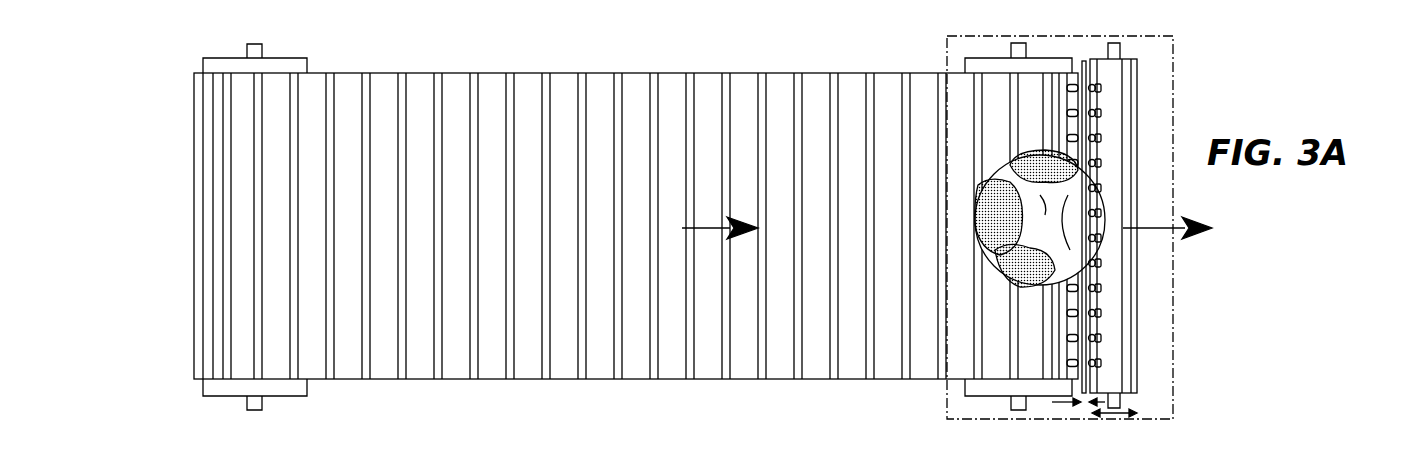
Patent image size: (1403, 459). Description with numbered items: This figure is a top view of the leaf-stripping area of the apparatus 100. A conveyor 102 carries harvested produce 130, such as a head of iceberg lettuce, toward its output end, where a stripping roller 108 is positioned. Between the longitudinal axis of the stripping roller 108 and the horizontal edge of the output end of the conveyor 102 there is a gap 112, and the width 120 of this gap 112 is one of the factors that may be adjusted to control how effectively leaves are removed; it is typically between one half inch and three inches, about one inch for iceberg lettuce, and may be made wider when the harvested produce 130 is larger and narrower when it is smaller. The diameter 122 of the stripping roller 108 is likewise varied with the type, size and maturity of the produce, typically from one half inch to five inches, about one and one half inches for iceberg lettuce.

The apparatus 100 is at (481, 64).
The conveyor 102 is at (747, 73).
The stripping roller 108 is at (1108, 103).
The gap 112 is at (1084, 410).
The width 120 is at (1073, 408).
The diameter 122 is at (1128, 412).
The harvested produce 130 is at (1010, 188).